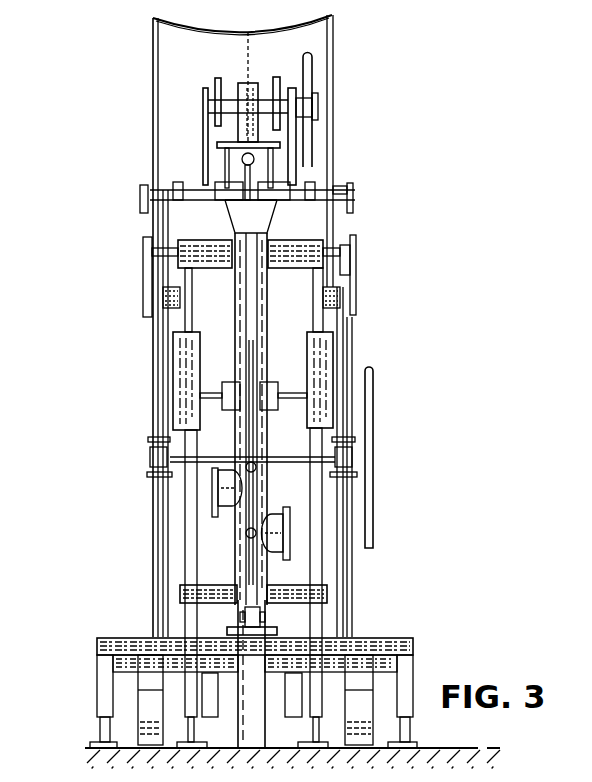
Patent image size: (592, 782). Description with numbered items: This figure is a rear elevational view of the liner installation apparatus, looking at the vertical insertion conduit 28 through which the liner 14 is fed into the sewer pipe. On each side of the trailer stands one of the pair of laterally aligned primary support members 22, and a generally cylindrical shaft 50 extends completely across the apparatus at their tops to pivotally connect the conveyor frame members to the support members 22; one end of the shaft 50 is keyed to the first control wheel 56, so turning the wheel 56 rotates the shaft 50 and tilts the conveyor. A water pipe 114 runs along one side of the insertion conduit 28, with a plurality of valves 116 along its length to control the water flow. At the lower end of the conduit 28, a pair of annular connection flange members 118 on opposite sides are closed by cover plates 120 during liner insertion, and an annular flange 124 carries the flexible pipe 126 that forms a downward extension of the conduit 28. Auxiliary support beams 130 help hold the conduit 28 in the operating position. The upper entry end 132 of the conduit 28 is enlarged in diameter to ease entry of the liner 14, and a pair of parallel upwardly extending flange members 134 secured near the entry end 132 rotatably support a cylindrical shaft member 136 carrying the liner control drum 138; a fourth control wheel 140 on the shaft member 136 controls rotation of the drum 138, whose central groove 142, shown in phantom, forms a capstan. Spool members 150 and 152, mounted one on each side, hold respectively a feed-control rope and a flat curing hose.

The liner 14 is at (252, 87).
The primary support members 22 is at (352, 502).
The insertion conduit 28 is at (266, 285).
The shaft 50 is at (300, 457).
The first control wheel 56 is at (373, 402).
The water pipe 114 is at (250, 322).
The valves 116 is at (242, 160).
The annular connection flange members 118 is at (229, 477).
The cover plates 120 is at (213, 510).
The annular flange 124 is at (233, 628).
The flexible pipe 126 is at (255, 727).
The auxiliary support beams 130 is at (330, 592).
The entry end 132 is at (273, 167).
The flange members 134 is at (213, 133).
The shaft member 136 is at (318, 100).
The liner control drum 138 is at (230, 97).
The fourth control wheel 140 is at (312, 72).
The groove 142 is at (243, 150).
The spool member 150 is at (345, 186).
The spool member 152 is at (140, 207).